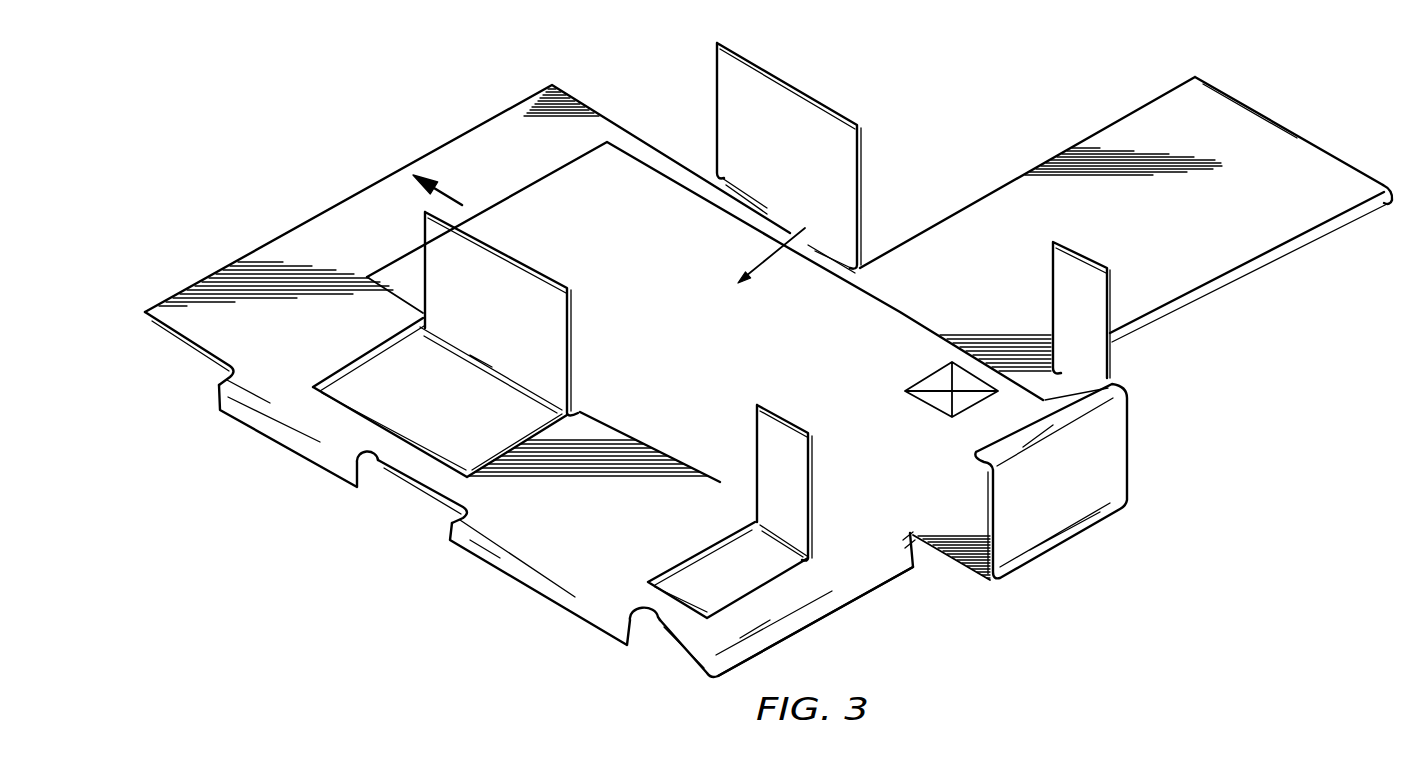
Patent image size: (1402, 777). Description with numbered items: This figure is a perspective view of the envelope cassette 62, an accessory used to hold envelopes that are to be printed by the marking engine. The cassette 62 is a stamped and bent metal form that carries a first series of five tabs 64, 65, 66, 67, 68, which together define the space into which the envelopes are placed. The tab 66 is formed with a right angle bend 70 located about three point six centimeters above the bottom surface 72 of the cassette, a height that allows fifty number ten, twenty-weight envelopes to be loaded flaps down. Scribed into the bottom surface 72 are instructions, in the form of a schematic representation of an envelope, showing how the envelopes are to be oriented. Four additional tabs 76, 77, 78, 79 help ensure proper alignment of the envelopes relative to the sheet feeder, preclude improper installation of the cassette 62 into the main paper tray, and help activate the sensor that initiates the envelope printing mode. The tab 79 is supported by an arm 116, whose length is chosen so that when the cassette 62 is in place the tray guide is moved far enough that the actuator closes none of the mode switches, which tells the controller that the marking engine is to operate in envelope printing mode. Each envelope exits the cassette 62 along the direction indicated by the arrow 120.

The envelope cassette 62 is at (644, 90).
The tab 64 is at (807, 92).
The tab 65 is at (1088, 260).
The tab 66 is at (1122, 463).
The tab 67 is at (810, 433).
The tab 68 is at (494, 243).
The right angle bend 70 is at (1003, 433).
The bottom surface 72 is at (840, 235).
The additional tab 76 is at (264, 443).
The additional tab 77 is at (552, 603).
The additional tab 78 is at (847, 597).
The additional tab 79 is at (1379, 197).
The arm 116 is at (1148, 86).
The arrow 120 is at (452, 197).